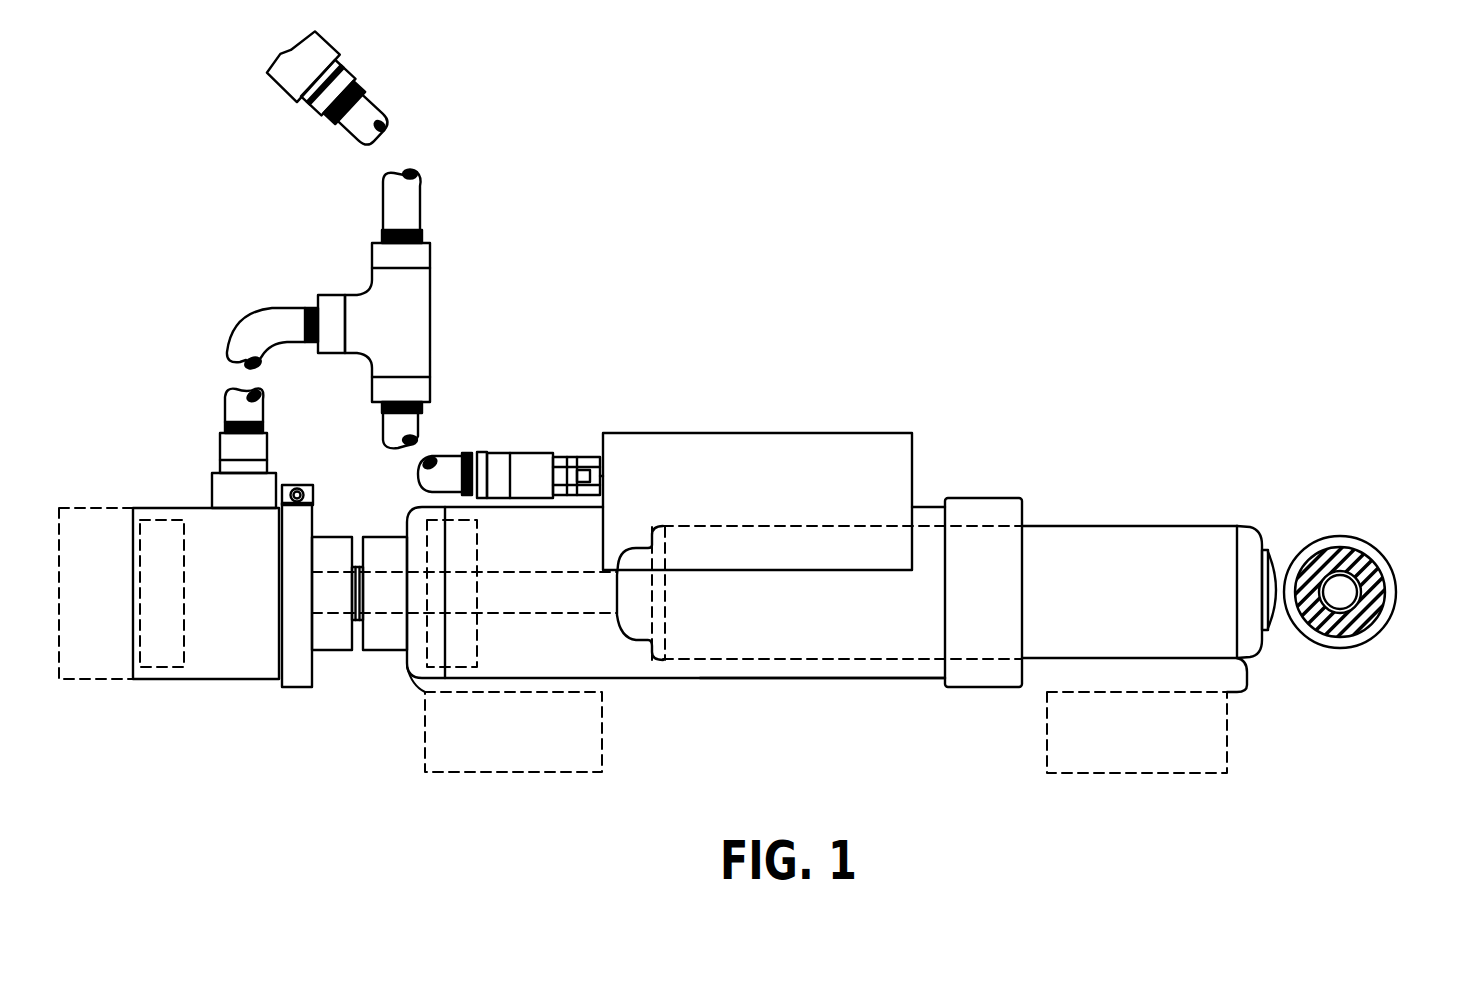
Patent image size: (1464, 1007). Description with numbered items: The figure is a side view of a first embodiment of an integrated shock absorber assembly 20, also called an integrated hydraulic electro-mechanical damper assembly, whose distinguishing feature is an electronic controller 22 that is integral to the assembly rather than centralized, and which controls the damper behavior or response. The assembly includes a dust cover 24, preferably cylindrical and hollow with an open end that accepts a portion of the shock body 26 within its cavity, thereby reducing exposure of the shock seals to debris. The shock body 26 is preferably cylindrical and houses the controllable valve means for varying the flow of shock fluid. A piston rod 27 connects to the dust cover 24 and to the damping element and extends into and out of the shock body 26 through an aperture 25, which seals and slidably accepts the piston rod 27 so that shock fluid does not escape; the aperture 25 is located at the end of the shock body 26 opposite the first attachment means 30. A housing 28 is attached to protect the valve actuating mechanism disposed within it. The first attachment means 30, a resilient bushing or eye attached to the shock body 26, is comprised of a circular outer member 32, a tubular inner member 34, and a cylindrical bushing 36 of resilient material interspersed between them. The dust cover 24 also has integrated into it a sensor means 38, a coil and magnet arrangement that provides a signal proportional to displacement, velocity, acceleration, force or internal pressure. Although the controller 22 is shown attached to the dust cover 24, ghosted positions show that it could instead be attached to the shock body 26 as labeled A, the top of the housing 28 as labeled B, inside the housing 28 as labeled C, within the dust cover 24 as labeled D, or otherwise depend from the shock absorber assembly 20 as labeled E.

The integrated shock absorber assembly 20 is at (676, 324).
The electronic controller 22 is at (882, 395).
The dust cover 24 is at (830, 678).
The aperture 25 is at (617, 593).
The shock body 26 is at (1157, 526).
The piston rod 27 is at (572, 615).
The housing 28 is at (163, 507).
The first attachment means 30 is at (1363, 617).
The outer member 32 is at (1308, 537).
The inner member 34 is at (1363, 583).
The cylindrical bushing 36 is at (1360, 550).
The sensor means 38 is at (1019, 461).
The ghosted controller position on shock body A is at (1108, 773).
The ghosted controller position on top of housing B is at (85, 680).
The ghosted controller position inside housing C is at (160, 667).
The ghosted controller position within dust cover D is at (412, 520).
The ghosted controller position depending from assembly E is at (558, 772).